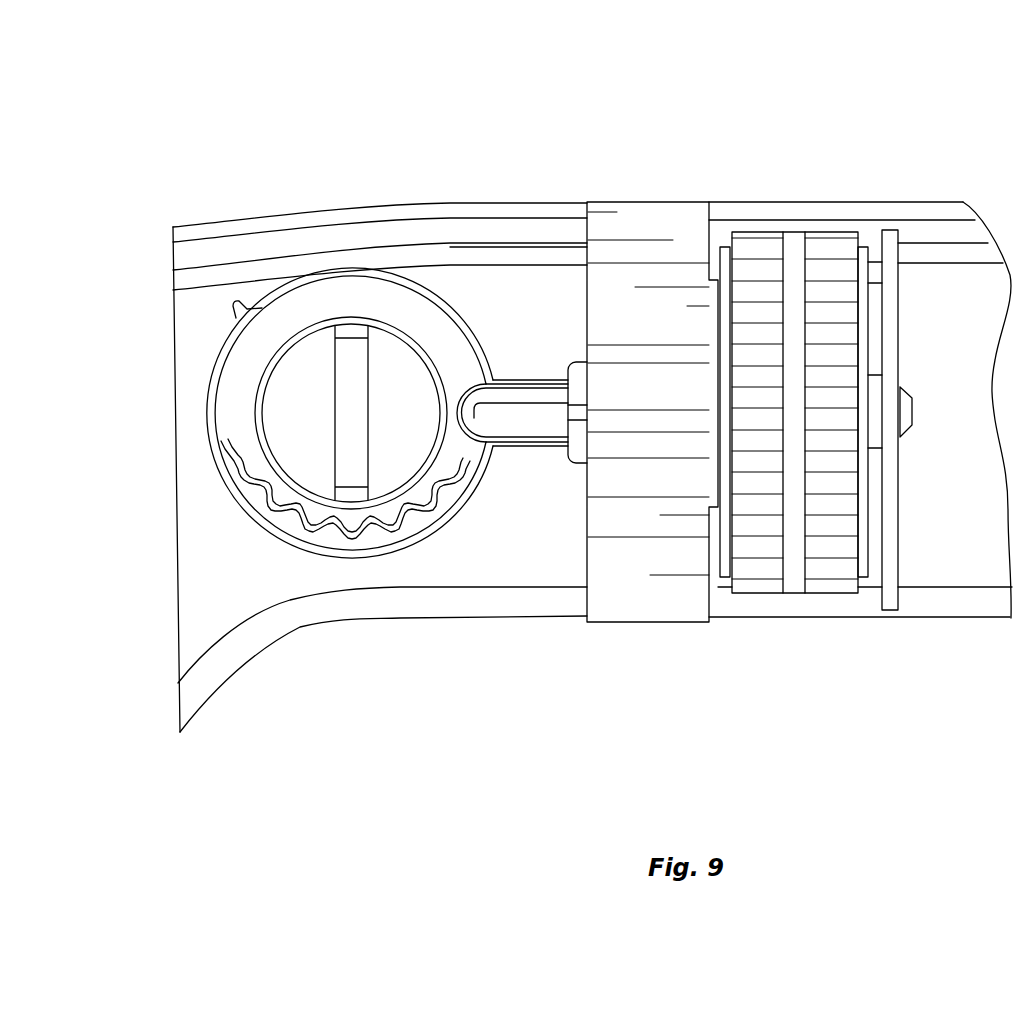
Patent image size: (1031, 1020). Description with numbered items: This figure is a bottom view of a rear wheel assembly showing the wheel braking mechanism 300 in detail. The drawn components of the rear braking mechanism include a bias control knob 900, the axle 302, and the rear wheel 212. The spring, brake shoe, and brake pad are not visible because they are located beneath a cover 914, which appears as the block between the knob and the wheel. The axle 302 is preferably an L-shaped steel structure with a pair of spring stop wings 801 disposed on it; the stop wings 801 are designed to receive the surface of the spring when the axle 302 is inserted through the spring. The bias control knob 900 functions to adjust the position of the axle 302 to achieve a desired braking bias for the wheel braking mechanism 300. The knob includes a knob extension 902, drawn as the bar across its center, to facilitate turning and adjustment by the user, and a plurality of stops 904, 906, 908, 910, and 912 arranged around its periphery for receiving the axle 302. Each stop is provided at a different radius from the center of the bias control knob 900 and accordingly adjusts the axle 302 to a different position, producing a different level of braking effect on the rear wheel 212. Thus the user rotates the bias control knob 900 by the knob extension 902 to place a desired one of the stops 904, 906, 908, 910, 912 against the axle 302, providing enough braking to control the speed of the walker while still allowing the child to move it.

The wheel braking mechanism 300 is at (745, 81).
The bias control knob 900 is at (317, 297).
The knob extension 902 is at (333, 397).
The stop 904 is at (282, 520).
The stop 906 is at (328, 532).
The stop 908 is at (394, 530).
The stop 910 is at (442, 503).
The stop 912 is at (483, 450).
The axle 302 is at (527, 393).
The spring stop wings 801 is at (577, 458).
The cover 914 is at (662, 203).
The rear wheel 212 is at (840, 232).